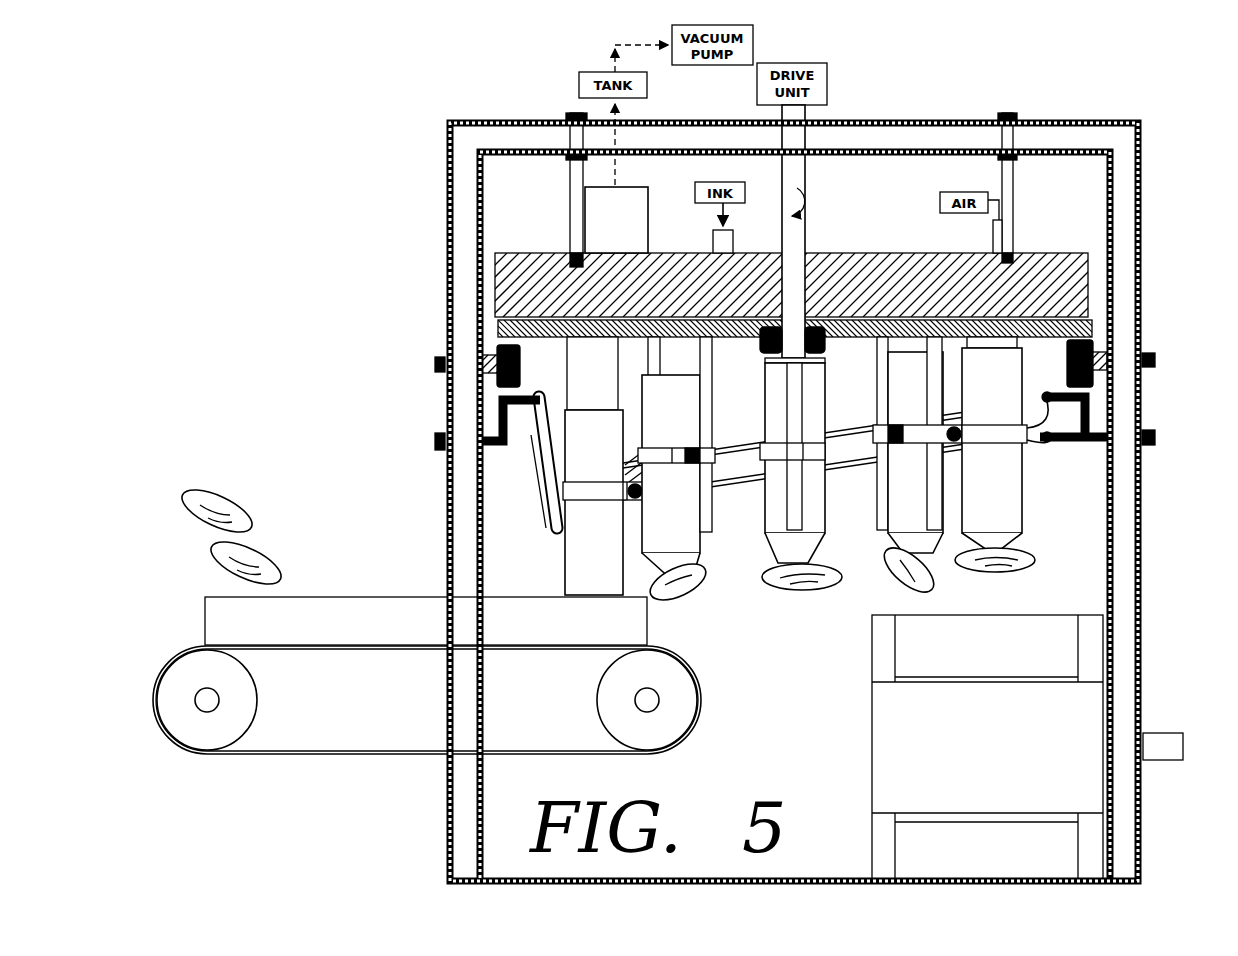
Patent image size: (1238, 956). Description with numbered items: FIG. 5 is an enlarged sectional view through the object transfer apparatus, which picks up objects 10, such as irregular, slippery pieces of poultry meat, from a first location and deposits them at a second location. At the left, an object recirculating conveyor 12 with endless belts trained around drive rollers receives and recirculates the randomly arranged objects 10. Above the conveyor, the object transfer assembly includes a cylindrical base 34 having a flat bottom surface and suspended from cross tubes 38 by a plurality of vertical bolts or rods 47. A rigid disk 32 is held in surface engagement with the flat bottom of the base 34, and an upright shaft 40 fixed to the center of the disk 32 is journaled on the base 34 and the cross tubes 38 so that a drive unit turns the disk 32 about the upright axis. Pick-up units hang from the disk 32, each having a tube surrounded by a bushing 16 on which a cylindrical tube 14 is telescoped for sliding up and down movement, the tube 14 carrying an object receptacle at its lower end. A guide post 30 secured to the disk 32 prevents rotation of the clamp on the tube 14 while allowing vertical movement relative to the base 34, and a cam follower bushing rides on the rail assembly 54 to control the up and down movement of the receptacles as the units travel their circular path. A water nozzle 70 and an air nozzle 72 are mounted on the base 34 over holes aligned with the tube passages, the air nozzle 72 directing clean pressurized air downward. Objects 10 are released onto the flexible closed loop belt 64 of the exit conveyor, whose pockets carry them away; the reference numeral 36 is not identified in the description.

The object 10 is at (215, 505).
The object recirculating conveyor 12 is at (360, 720).
The cylindrical tube 14 is at (993, 485).
The bushing 16 is at (590, 370).
The guide post 30 is at (794, 485).
The rigid disk 32 is at (1112, 328).
The cylindrical base 34 is at (828, 253).
The vacuum tank post 36 is at (583, 190).
The cross tubes 38 is at (1125, 166).
The upright shaft 40 is at (797, 188).
The vertical bolts or rods 47 is at (1007, 185).
The rail assembly 54 is at (530, 480).
The flexible closed loop belt 64 is at (918, 658).
The water nozzle 70 is at (727, 233).
The air nozzle 72 is at (995, 240).